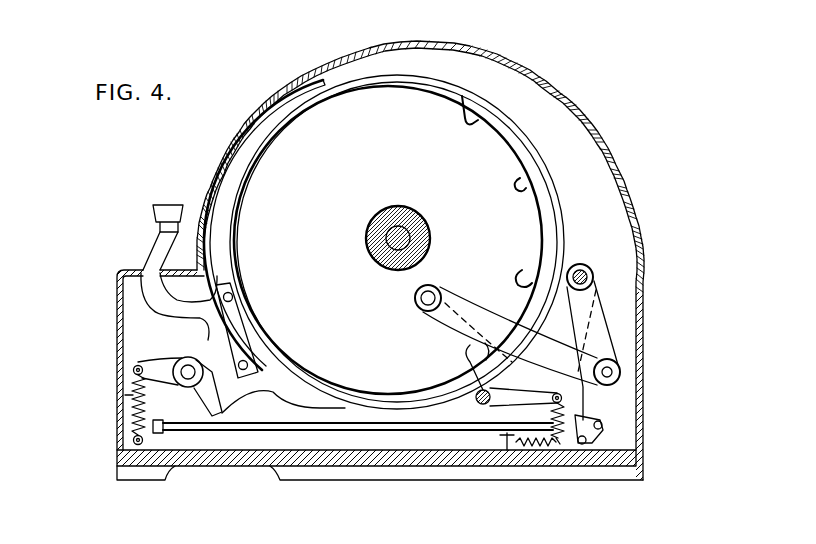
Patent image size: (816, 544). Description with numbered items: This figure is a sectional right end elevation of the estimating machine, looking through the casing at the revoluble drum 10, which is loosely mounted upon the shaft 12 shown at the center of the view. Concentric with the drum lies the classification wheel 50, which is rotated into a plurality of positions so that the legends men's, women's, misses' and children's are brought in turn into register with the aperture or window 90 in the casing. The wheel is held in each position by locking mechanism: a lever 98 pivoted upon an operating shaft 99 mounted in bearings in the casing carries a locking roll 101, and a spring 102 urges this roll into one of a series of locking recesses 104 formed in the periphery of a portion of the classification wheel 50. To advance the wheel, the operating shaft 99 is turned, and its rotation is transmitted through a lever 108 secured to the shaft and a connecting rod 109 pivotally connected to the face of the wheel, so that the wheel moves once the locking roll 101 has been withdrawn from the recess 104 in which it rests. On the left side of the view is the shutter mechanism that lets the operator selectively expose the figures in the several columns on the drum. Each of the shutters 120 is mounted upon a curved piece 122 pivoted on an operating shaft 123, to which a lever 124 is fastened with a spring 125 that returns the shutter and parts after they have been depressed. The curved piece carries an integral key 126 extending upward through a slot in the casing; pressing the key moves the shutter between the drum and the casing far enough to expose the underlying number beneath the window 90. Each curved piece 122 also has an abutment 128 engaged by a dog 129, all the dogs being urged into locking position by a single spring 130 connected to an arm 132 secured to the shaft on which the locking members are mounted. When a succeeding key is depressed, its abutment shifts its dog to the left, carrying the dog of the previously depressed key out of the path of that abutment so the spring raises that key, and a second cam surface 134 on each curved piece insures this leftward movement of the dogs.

The revoluble drum 10 is at (512, 122).
The shaft 12 is at (432, 237).
The classification wheel 50 is at (415, 97).
The aperture or window 90 is at (303, 80).
The lever 98 is at (551, 330).
The operating shaft 99 is at (596, 282).
The locking roll 101 is at (475, 357).
The spring 102 is at (548, 452).
The locking recesses 104 is at (525, 190).
The lever 108 is at (597, 330).
The connecting rod 109 is at (436, 310).
The shutters 120 is at (250, 148).
The curved piece 122 is at (265, 440).
The operating shaft 123 is at (510, 428).
The lever 124 is at (538, 450).
The spring 125 is at (575, 417).
The key 126 is at (152, 217).
The abutment 128 is at (185, 358).
The dog 129 is at (140, 395).
The spring 130 is at (125, 405).
The arm 132 is at (200, 392).
The second cam surface 134 is at (140, 322).